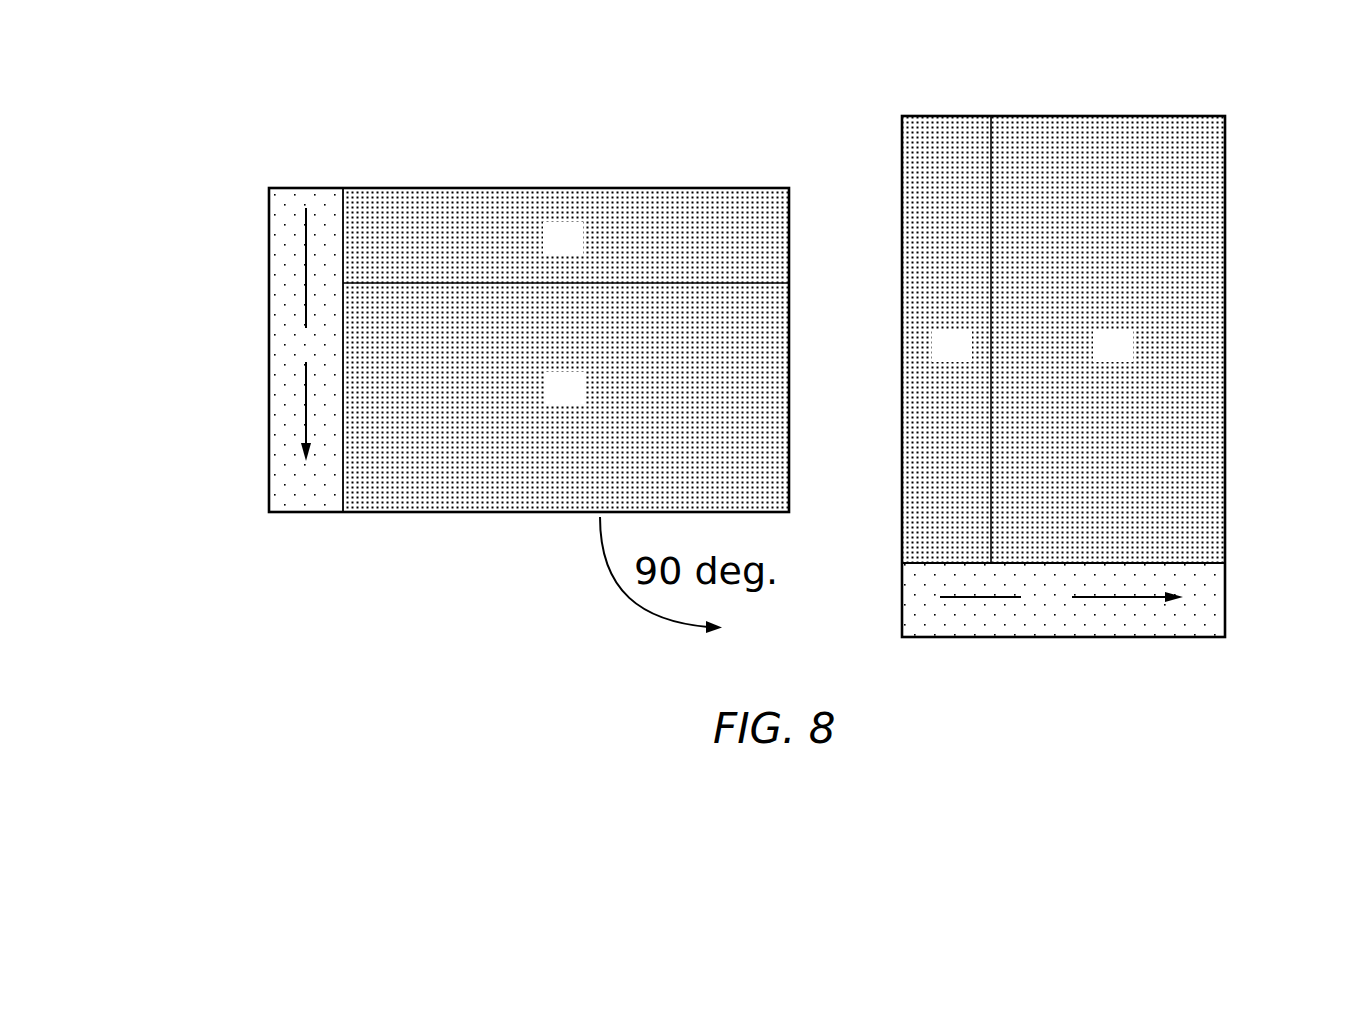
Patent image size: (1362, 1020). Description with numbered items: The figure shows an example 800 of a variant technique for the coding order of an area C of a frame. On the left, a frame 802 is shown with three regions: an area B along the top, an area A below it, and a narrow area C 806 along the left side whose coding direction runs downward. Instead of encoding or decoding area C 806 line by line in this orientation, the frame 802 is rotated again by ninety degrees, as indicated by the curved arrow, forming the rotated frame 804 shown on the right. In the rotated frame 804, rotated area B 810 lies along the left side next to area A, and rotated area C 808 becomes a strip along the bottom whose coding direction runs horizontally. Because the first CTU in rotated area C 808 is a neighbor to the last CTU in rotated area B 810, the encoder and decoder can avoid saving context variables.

The example of variant technique for coding order of area C 800 is at (702, 80).
The frame 802 is at (261, 172).
The rotated frame 804 is at (1239, 97).
The area C 806 is at (314, 197).
The rotated area C 808 is at (917, 590).
The rotated area B 810 is at (948, 128).